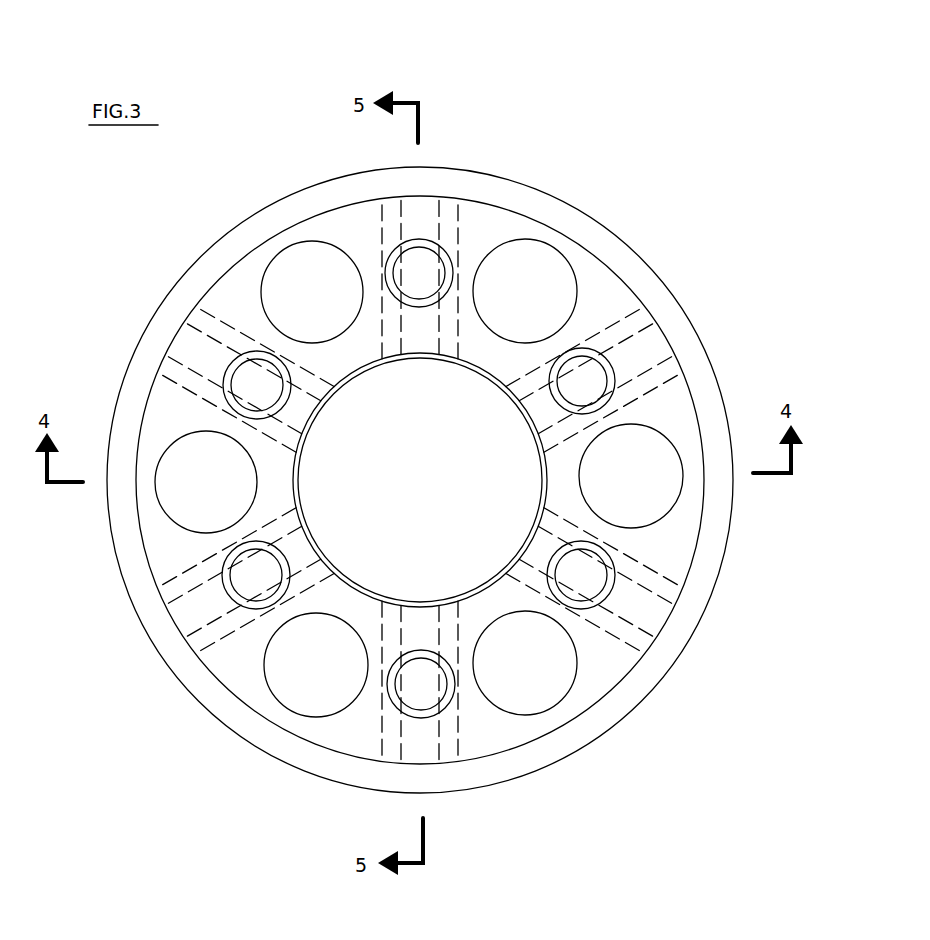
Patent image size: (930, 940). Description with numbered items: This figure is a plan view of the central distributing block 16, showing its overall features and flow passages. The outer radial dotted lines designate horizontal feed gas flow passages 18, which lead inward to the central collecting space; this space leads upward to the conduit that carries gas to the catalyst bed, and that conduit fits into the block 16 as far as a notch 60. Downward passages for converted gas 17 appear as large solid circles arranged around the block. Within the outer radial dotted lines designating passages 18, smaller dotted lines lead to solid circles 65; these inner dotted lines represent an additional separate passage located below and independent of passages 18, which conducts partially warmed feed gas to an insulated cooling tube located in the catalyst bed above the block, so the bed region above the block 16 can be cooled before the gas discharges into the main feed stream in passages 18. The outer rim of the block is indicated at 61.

The central distributing block 16 is at (600, 275).
The downward passages for converted gas 17 is at (262, 293).
The horizontal feed gas flow passages 18 is at (447, 206).
The notch 60 is at (305, 433).
The outer rim ring 61 is at (605, 712).
The small solid circles (cooling tube passage openings) 65 is at (427, 293).